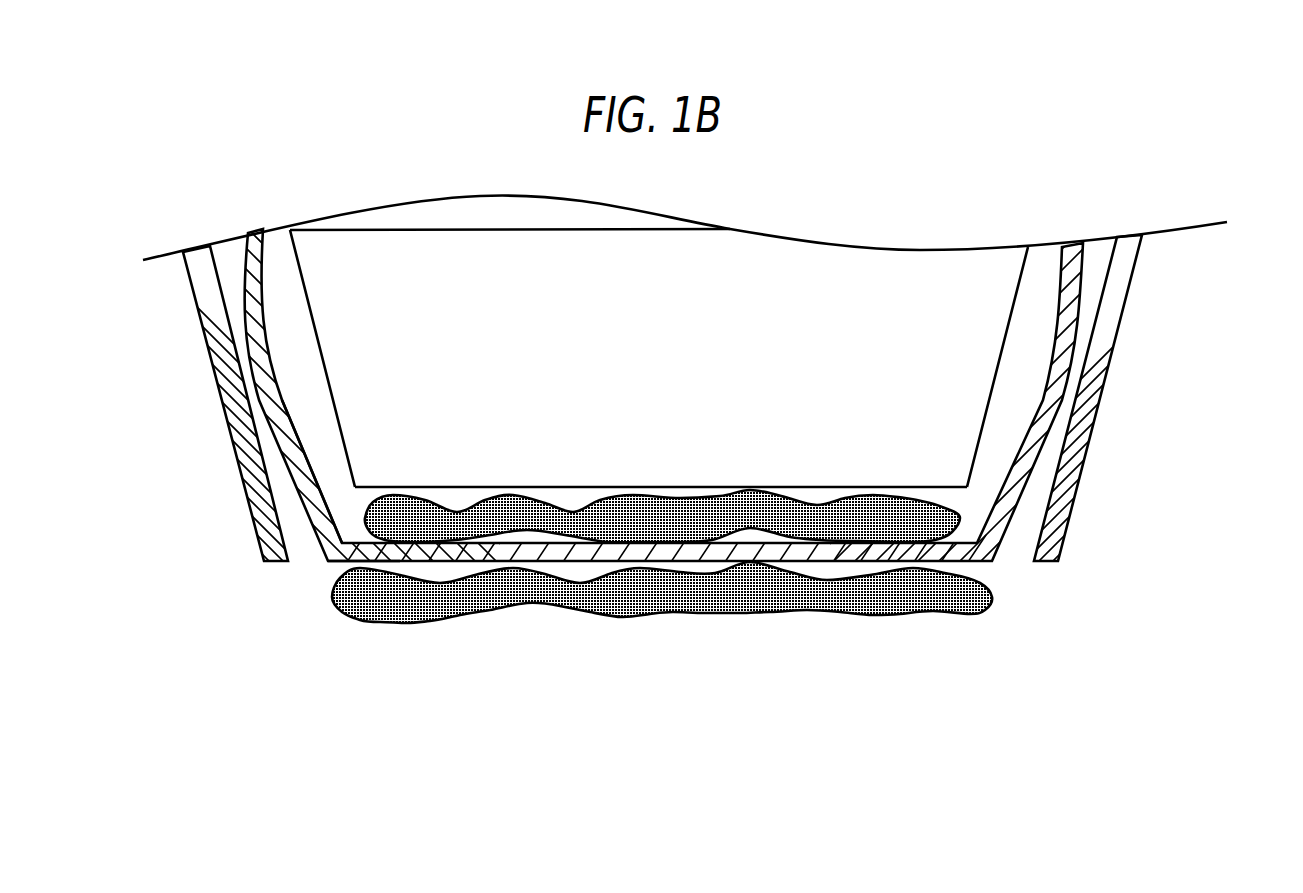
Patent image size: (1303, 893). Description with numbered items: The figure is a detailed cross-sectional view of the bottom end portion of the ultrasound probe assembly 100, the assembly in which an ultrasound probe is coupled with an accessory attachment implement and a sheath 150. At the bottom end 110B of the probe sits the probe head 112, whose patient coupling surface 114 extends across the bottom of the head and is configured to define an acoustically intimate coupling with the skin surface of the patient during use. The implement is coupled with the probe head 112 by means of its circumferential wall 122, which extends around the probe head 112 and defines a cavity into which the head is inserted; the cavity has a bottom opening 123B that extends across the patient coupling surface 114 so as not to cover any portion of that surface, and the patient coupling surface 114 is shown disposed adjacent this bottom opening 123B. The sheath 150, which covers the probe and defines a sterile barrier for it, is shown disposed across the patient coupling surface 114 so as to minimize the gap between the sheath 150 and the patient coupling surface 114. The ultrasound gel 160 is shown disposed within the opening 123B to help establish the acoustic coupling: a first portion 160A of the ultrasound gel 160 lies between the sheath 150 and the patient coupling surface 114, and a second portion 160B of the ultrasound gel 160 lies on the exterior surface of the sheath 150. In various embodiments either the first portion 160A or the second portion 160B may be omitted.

The ultrasound probe assembly 100 is at (136, 225).
The probe head 112 is at (903, 330).
The patient coupling surface 114 is at (917, 490).
The circumferential wall 122 is at (1133, 278).
The sheath 150 is at (1068, 382).
The bottom end 110B is at (322, 448).
The bottom opening 123B is at (292, 585).
The ultrasound gel 160 is at (697, 620).
The first portion of the ultrasound gel 160A is at (757, 513).
The second portion of the ultrasound gel 160B is at (653, 593).